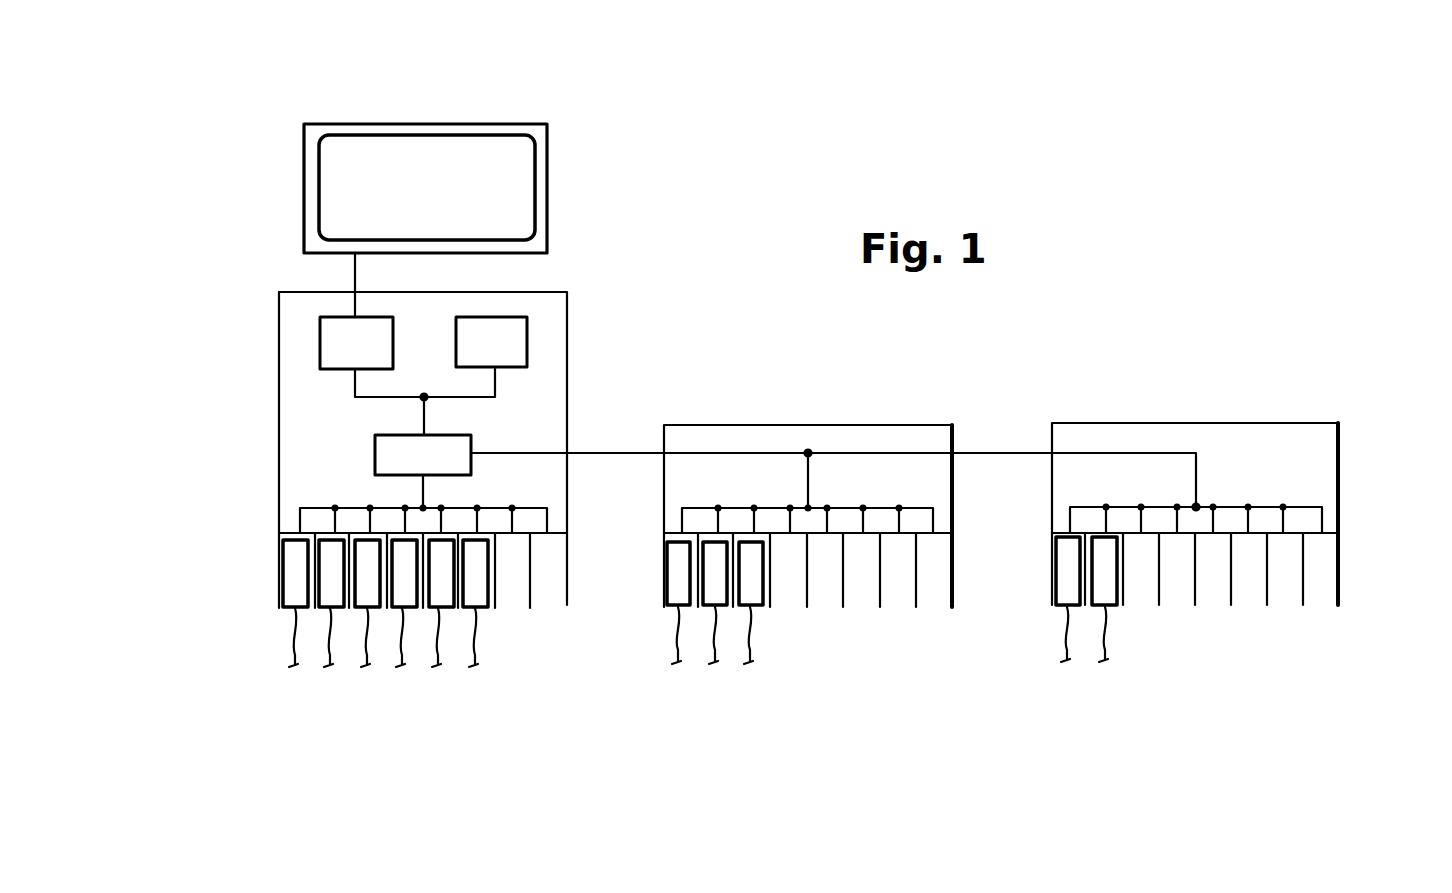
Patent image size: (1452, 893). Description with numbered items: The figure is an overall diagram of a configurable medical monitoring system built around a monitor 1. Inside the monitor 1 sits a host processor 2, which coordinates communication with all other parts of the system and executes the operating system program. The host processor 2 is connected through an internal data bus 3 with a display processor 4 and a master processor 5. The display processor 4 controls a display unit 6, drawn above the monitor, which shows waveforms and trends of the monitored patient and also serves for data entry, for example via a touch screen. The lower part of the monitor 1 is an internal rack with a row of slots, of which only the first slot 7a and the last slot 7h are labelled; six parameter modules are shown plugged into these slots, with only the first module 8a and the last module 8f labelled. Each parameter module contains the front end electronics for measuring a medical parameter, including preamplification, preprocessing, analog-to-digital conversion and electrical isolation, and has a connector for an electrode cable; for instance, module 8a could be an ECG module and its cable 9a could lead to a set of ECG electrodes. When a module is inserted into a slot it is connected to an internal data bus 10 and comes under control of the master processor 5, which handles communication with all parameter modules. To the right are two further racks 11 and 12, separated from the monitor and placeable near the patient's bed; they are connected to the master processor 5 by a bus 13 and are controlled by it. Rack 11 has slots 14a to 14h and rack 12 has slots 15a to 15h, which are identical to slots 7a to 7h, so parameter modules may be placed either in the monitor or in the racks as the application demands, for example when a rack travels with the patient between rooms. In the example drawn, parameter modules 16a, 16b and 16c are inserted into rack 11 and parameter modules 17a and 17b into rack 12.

The monitor 1 is at (598, 305).
The host processor 2 is at (512, 333).
The internal data bus 3 is at (483, 402).
The display processor 4 is at (332, 340).
The master processor 5 is at (382, 453).
The display unit 6 is at (518, 180).
The slot 7a is at (278, 545).
The slot 7h is at (560, 548).
The parameter module 8a is at (292, 580).
The parameter module 8f is at (478, 593).
The cable 9a is at (293, 637).
The internal data bus 10 is at (312, 510).
The rack 11 is at (857, 425).
The rack 12 is at (1180, 423).
The bus 13 is at (613, 452).
The slot 14a is at (665, 557).
The slot 14h is at (943, 547).
The slot 15a is at (1052, 550).
The slot 15h is at (1323, 558).
The parameter module 16a is at (673, 588).
The parameter module 16b is at (717, 593).
The parameter module 16c is at (755, 593).
The parameter module 17a is at (1062, 573).
The parameter module 17b is at (1108, 592).